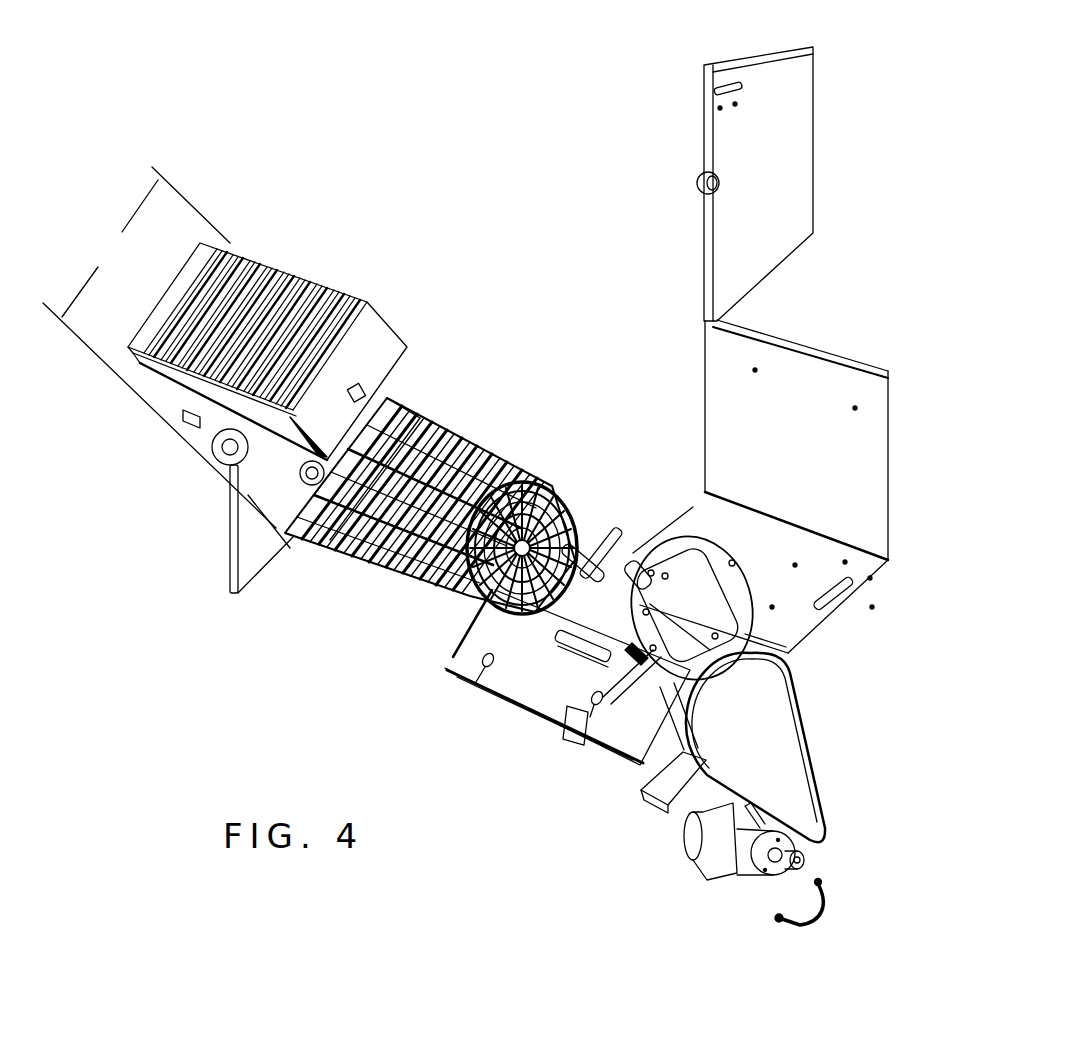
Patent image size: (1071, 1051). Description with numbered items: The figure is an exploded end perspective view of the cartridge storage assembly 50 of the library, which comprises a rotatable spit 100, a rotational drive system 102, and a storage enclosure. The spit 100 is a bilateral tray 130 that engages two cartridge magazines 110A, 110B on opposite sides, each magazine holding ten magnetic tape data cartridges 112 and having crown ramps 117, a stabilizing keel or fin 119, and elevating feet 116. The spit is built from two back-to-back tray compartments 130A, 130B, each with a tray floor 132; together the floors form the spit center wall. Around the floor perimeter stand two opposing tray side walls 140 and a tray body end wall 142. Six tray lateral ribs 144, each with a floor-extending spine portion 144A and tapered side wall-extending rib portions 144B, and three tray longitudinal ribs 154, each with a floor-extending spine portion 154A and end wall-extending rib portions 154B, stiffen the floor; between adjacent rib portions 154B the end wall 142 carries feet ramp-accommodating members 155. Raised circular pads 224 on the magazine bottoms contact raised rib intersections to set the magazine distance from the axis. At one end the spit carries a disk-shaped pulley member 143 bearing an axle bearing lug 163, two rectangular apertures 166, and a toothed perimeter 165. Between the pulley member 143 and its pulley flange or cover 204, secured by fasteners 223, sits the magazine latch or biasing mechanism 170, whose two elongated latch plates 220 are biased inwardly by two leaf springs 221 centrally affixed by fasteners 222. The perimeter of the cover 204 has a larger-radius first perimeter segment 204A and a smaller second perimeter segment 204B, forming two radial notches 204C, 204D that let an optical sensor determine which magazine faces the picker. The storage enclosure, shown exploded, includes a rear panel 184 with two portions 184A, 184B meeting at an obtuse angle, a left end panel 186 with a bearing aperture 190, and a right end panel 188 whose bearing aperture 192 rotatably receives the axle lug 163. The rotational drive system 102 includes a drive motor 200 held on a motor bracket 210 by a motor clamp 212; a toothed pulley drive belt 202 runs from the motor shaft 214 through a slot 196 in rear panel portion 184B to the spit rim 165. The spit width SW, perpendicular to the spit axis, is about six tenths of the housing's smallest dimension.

The cartridge storage assembly 50 is at (442, 152).
The rotatable spit 100 is at (527, 235).
The rotational drive system 102 is at (822, 794).
The cartridge magazine 110A is at (293, 258).
The cartridge magazine 110B is at (573, 742).
The magnetic tape data cartridge 112 is at (363, 303).
The elevating feet 116 is at (420, 405).
The crown ramps 117 is at (448, 405).
The stabilizing keel or fin 119 is at (557, 645).
The tray 130 is at (290, 467).
The tray compartment 130A is at (330, 597).
The tray compartment 130B is at (417, 610).
The tray floor 132 is at (500, 432).
The tray side wall 140 is at (490, 425).
The tray body end wall 142 is at (270, 550).
The pulley member 143 is at (570, 505).
The tray lateral rib 144 is at (475, 420).
The floor-extending spine portion 144A is at (330, 580).
The side wall-extending rib portion 144B is at (470, 423).
The tray longitudinal rib 154 is at (330, 610).
The floor-extending spine portion 154A is at (430, 592).
The end wall-extending rib portion 154B is at (283, 560).
The feet ramp-accommodating member 155 is at (290, 510).
The axle bearing lug 163 is at (516, 612).
The toothed perimeter 165 is at (470, 594).
The rectangular aperture 166 is at (586, 553).
The magazine latch or biasing mechanism 170 is at (668, 440).
The rear panel 184 is at (837, 350).
The rear panel portion 184A is at (826, 435).
The rear panel portion 184B is at (820, 595).
The left end panel 186 is at (230, 483).
The right end panel 188 is at (775, 152).
The bearing aperture 190 is at (217, 463).
The bearing aperture 192 is at (698, 182).
The slot 196 is at (850, 610).
The drive motor 200 is at (728, 865).
The toothed pulley drive belt 202 is at (808, 762).
The pulley flange or cover 204 is at (800, 637).
The first perimeter segment 204A is at (750, 595).
The second perimeter segment 204B is at (693, 510).
The radial notch 204C is at (735, 560).
The radial notch 204D is at (583, 656).
The motor bracket 210 is at (680, 812).
The motor clamp 212 is at (792, 920).
The shaft 214 is at (805, 860).
The latch plate 220 is at (620, 527).
The leaf spring 221 is at (633, 537).
The fastener 222 is at (728, 530).
The fastener 223 is at (740, 560).
The raised circular pad 224 is at (477, 680).
The spit width SW is at (159, 347).